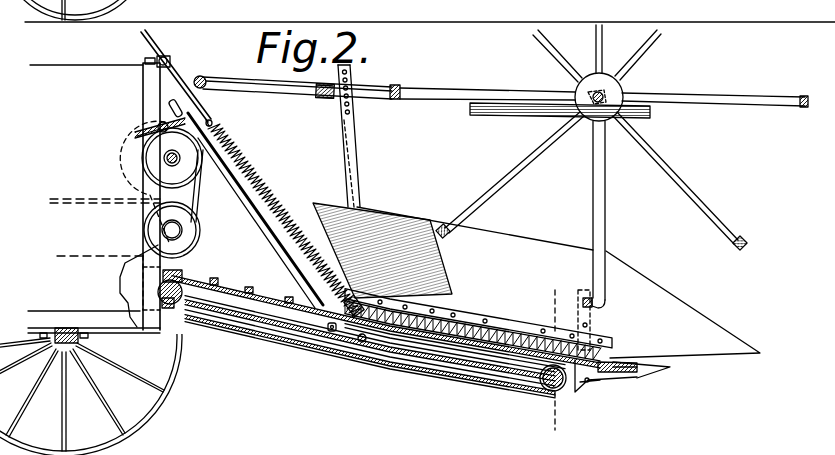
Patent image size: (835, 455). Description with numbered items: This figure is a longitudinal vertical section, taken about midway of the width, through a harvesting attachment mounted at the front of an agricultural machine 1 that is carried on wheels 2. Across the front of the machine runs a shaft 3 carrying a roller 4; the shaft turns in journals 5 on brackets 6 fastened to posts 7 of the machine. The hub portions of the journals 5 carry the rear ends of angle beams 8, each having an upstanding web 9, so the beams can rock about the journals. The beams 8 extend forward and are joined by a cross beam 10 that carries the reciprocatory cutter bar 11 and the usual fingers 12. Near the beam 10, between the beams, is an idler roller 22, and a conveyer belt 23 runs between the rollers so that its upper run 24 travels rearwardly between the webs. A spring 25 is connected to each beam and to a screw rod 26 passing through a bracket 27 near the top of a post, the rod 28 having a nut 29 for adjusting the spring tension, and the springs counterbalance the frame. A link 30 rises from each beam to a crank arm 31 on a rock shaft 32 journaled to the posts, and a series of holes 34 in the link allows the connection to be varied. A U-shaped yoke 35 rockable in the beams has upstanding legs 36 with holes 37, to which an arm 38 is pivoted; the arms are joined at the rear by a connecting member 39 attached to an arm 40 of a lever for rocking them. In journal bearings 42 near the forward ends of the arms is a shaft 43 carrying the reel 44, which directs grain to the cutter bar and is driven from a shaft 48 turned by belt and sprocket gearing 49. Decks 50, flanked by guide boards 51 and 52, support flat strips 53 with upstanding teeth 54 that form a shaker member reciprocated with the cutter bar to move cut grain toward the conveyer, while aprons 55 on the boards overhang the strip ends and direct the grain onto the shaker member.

The machine 1 is at (86, 99).
The wheels 2 is at (166, 410).
The shaft 3 is at (183, 290).
The roller 4 is at (186, 314).
The journals 5 is at (570, 361).
The brackets 6 is at (170, 272).
The posts 7 is at (145, 238).
The beams 8 is at (417, 367).
The web 9 is at (262, 308).
The beam 10 is at (577, 387).
The cutter bar 11 is at (610, 377).
The fingers 12 is at (657, 370).
The roller 22 is at (527, 397).
The conveyer belt 23 is at (305, 340).
The upper run 24 is at (385, 350).
The spring 25 is at (248, 161).
The screw rod 26 is at (204, 113).
The bracket 27 is at (168, 60).
The rod 28 is at (141, 40).
The nut 29 is at (166, 55).
The link 30 is at (272, 236).
The crank arm 31 is at (150, 120).
The rock shaft 32 is at (158, 130).
The holes 34 is at (170, 107).
The yoke 35 is at (358, 342).
The legs 36 is at (357, 178).
The holes 37 is at (348, 70).
The arm 38 is at (330, 93).
The connecting member 39 is at (207, 80).
The arm 40 is at (197, 77).
The journal bearings 42 is at (610, 92).
The shaft 43 is at (594, 102).
The reel 44 is at (690, 182).
The shaft 48 is at (165, 160).
The belt and sprocket gearing 49 is at (195, 198).
The decks 50 is at (467, 343).
The guide board 51 is at (524, 246).
The guide board 52 is at (405, 226).
The strips 53 is at (500, 333).
The teeth 54 is at (470, 327).
The aprons 55 is at (416, 304).